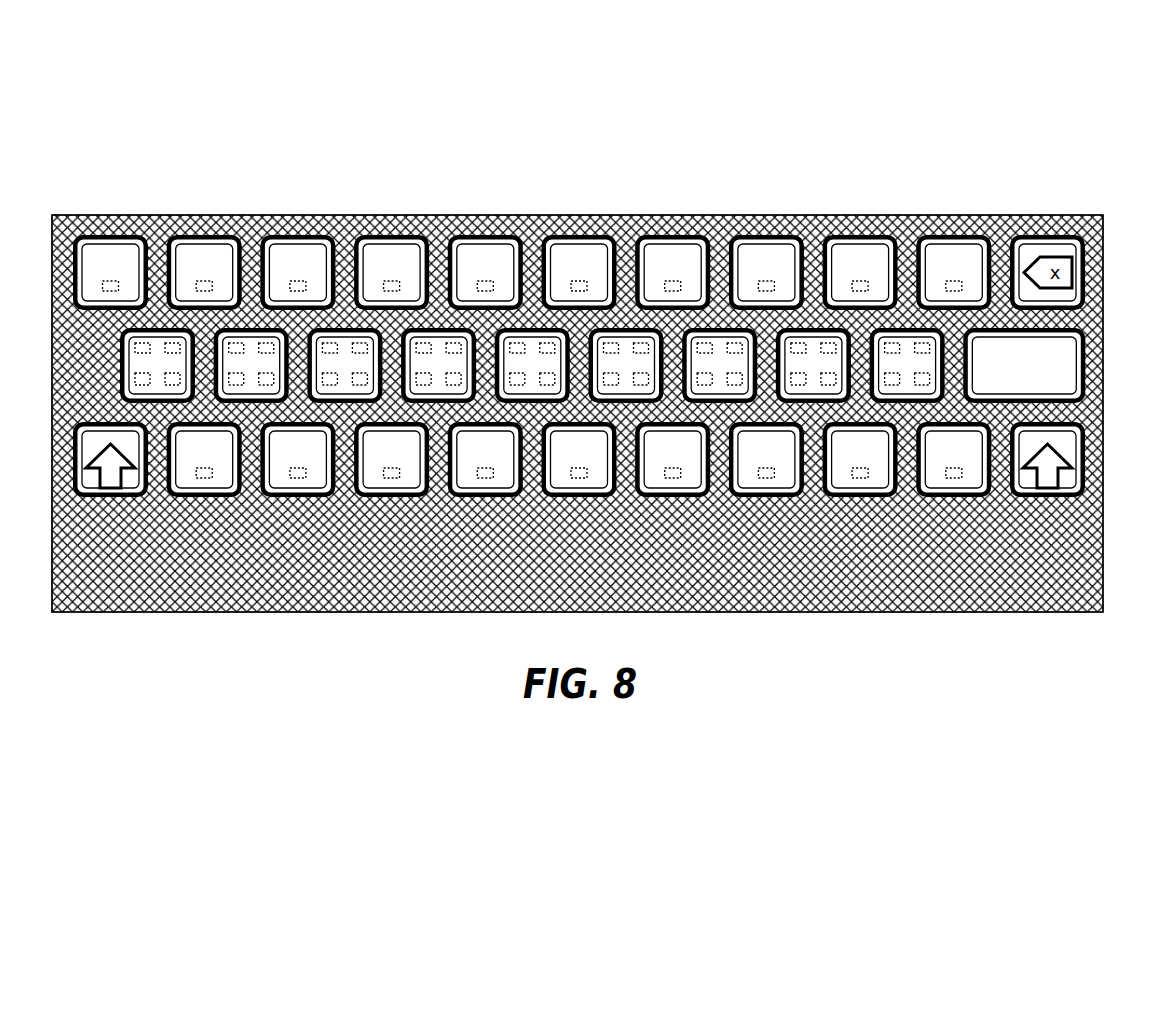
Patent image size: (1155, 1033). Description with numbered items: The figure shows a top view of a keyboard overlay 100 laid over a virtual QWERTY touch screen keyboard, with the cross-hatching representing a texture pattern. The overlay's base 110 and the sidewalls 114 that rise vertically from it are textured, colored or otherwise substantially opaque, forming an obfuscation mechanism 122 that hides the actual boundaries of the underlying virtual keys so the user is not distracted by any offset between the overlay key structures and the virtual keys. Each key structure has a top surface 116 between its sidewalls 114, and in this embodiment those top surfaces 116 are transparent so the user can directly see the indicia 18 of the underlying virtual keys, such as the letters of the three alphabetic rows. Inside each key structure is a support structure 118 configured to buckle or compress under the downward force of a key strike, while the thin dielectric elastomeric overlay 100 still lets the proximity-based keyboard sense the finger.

The keyboard overlay 100 is at (996, 103).
The base 110 is at (432, 235).
The sidewalls 114 is at (577, 413).
The obfuscation mechanism 122 is at (606, 214).
The indicia 18 is at (132, 250).
The top surface 116 is at (175, 250).
The support structure 118 is at (208, 252).